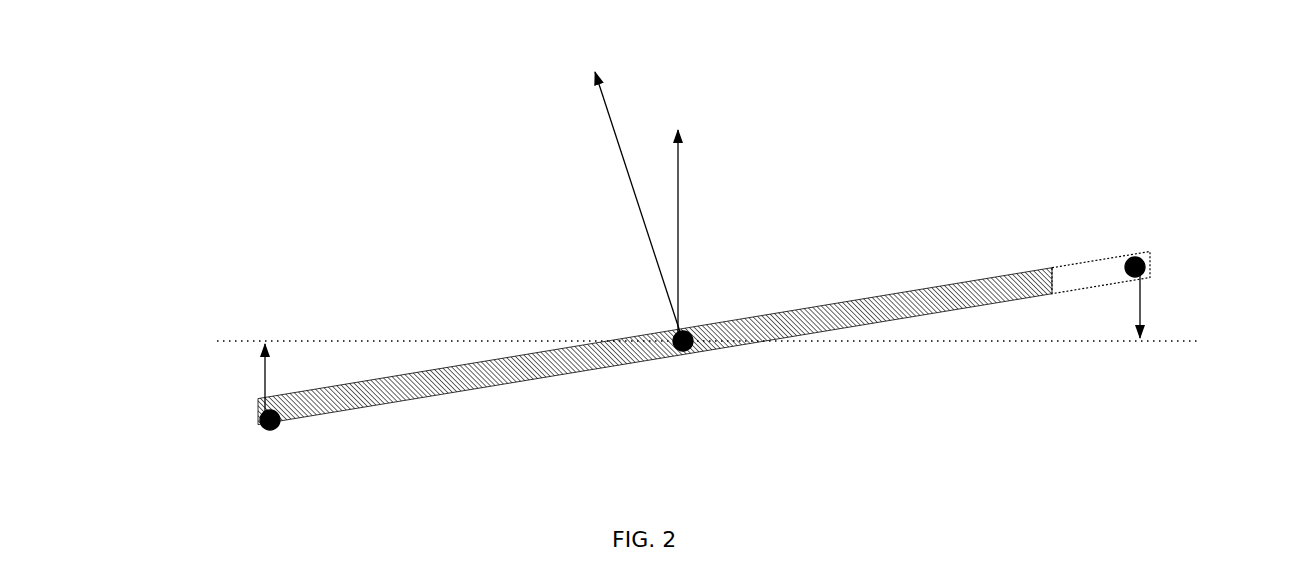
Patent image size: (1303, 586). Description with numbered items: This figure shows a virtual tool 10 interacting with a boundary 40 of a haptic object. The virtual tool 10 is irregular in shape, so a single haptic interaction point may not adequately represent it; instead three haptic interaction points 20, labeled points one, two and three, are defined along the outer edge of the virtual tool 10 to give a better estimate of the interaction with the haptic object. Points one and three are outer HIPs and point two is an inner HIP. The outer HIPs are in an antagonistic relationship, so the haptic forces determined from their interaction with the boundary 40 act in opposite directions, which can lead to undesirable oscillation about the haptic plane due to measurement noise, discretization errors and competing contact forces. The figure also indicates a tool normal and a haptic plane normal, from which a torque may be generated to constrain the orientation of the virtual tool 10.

The virtual tool 10 is at (300, 268).
The haptic interaction points 20 is at (1125, 272).
The boundary of the haptic object 40 is at (1170, 343).